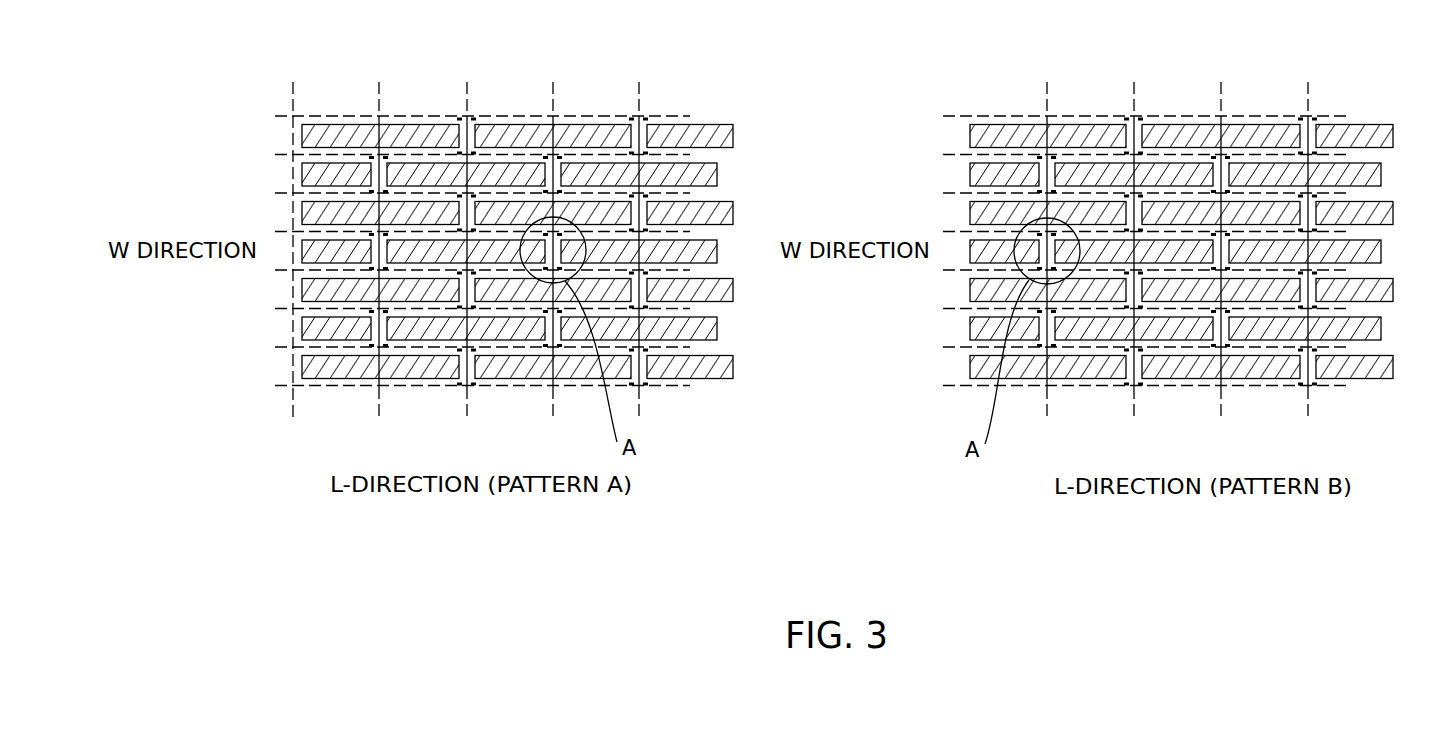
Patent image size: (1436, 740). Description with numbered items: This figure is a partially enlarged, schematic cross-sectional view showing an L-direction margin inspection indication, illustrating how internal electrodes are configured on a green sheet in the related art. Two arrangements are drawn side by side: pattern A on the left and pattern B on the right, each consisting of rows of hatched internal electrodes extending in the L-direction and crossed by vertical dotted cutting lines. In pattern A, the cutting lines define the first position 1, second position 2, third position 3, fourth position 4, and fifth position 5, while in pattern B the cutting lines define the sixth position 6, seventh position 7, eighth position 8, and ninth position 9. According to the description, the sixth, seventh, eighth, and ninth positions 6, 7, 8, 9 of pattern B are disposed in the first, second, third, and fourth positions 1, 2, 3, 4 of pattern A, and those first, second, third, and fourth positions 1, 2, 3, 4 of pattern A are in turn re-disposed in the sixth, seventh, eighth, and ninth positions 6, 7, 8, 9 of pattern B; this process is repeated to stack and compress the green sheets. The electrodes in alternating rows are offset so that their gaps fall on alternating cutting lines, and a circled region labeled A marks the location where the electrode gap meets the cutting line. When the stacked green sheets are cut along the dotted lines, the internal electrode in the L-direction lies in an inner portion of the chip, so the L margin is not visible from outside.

The first position of pattern A 1 is at (293, 93).
The second position of pattern A 2 is at (379, 93).
The third position of pattern A 3 is at (467, 93).
The fourth position of pattern A 4 is at (553, 93).
The fifth position of pattern A 5 is at (639, 93).
The sixth position of pattern B 6 is at (1047, 93).
The seventh position of pattern B 7 is at (1134, 93).
The eighth position of pattern B 8 is at (1221, 93).
The ninth position of pattern B 9 is at (1308, 93).